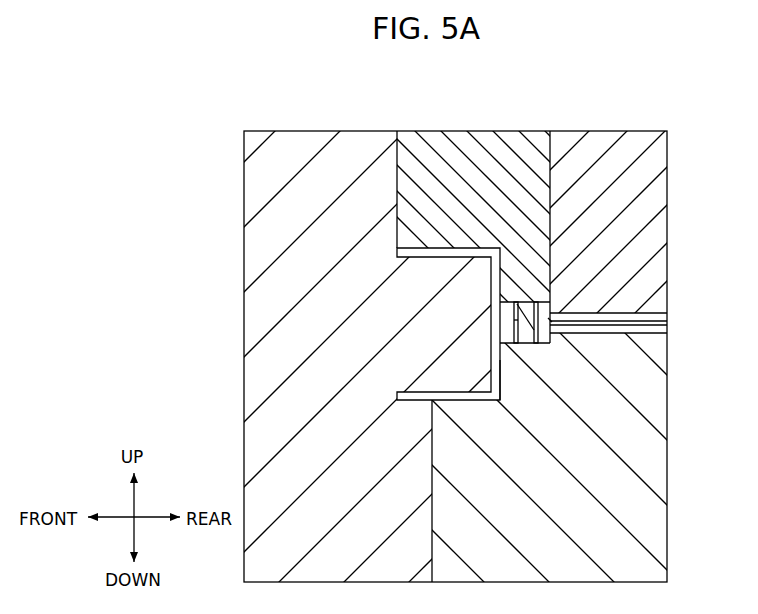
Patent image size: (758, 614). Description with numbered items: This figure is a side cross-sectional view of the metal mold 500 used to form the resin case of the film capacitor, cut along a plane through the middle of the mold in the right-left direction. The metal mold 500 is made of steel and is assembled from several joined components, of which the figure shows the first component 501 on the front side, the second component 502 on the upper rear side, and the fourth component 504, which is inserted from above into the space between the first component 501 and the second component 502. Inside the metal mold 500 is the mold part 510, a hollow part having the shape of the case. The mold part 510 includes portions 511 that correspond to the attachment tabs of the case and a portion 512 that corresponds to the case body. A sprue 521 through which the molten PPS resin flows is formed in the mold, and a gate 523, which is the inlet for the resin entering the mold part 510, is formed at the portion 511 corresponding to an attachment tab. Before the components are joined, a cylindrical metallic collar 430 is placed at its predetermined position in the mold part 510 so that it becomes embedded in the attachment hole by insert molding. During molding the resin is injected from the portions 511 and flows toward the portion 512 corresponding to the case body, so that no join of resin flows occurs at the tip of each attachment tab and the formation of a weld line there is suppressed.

The metal mold 500 is at (232, 270).
The first component 501 is at (244, 405).
The second component 502 is at (667, 243).
The fourth component 504 is at (473, 131).
The mold part 510 is at (473, 401).
The portions of mold part corresponding to attachment tabs 511 is at (538, 343).
The portion of mold part corresponding to case body 512 is at (500, 375).
The sprue 521 is at (612, 333).
The gate 523 is at (550, 320).
The collar 430 is at (517, 325).